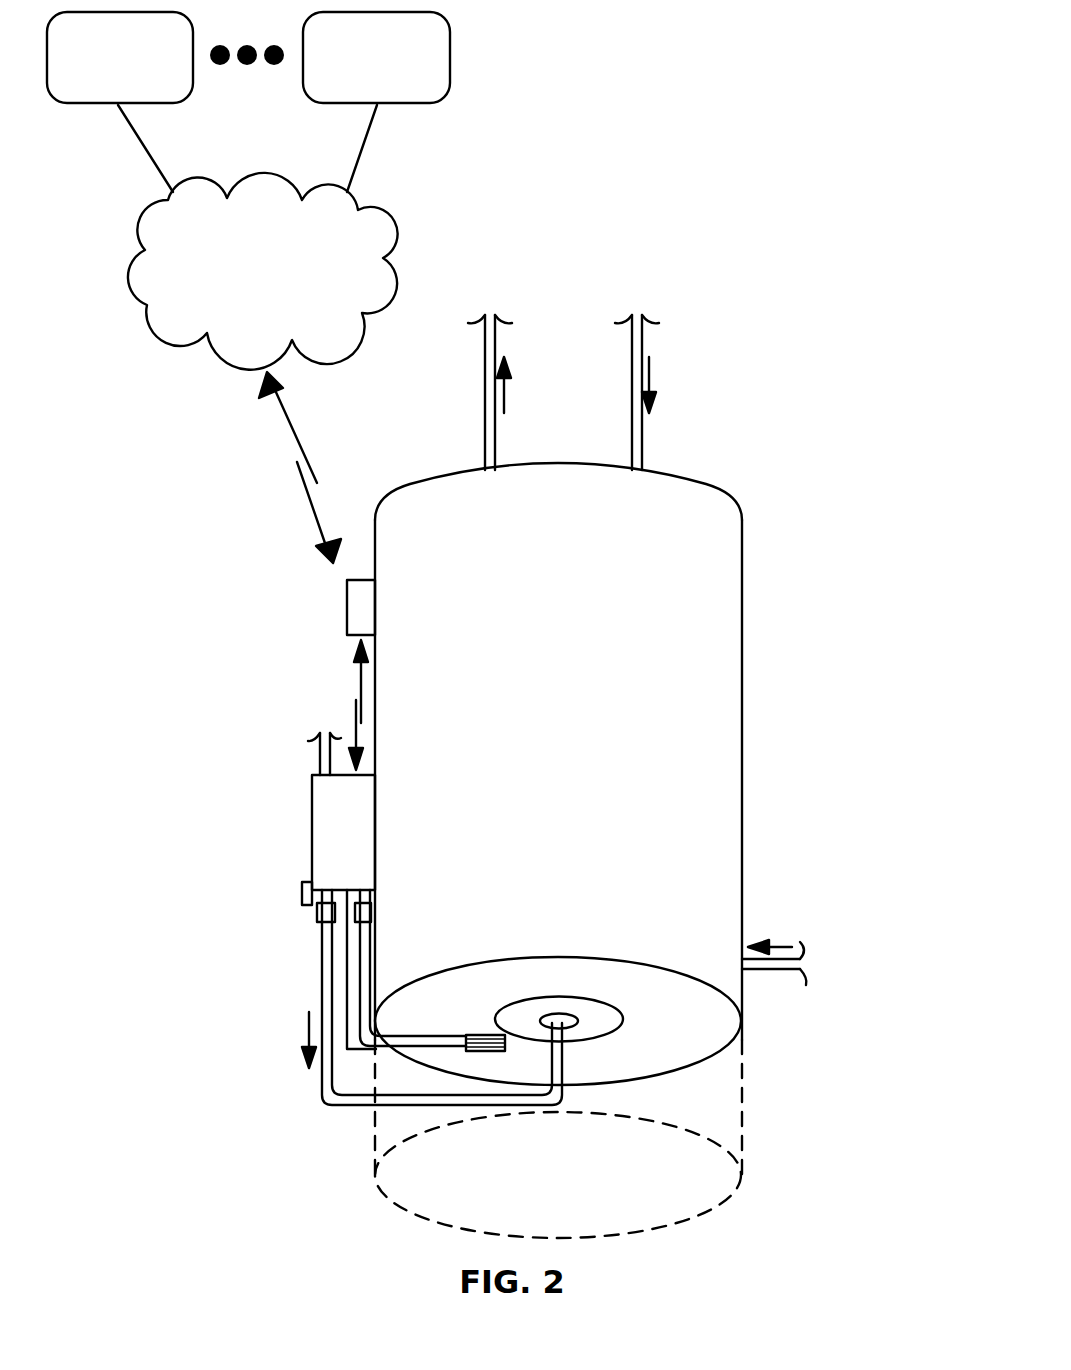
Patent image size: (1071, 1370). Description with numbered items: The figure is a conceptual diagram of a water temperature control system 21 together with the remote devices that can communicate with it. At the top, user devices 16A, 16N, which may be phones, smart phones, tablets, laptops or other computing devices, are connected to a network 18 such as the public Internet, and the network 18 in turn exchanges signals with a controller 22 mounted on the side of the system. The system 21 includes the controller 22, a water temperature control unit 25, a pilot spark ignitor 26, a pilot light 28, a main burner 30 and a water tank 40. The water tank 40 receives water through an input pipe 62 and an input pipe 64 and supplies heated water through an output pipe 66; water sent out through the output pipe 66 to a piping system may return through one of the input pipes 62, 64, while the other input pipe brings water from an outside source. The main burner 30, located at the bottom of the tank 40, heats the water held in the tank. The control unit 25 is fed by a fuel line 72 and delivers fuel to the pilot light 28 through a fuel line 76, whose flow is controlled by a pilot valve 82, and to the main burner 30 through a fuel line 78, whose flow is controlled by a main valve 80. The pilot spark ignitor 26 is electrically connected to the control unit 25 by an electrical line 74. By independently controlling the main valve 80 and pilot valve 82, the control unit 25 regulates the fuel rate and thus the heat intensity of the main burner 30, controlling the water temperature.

The user device 16A is at (120, 102).
The user device 16N is at (376, 102).
The network 18 is at (263, 271).
The water temperature control system 21 is at (818, 112).
The controller 22 is at (347, 612).
The water temperature control unit 25 is at (312, 837).
The pilot spark ignitor 26 is at (487, 1052).
The pilot light 28 is at (490, 1036).
The main burner 30 is at (522, 1003).
The water tank 40 is at (450, 472).
The input pipe 62 is at (632, 393).
The input pipe 64 is at (748, 970).
The output pipe 66 is at (485, 393).
The fuel line 72 is at (320, 760).
The electrical line 74 is at (362, 1050).
The fuel line 76 is at (370, 950).
The fuel line 78 is at (322, 995).
The main valve 80 is at (318, 912).
The pilot valve 82 is at (372, 908).